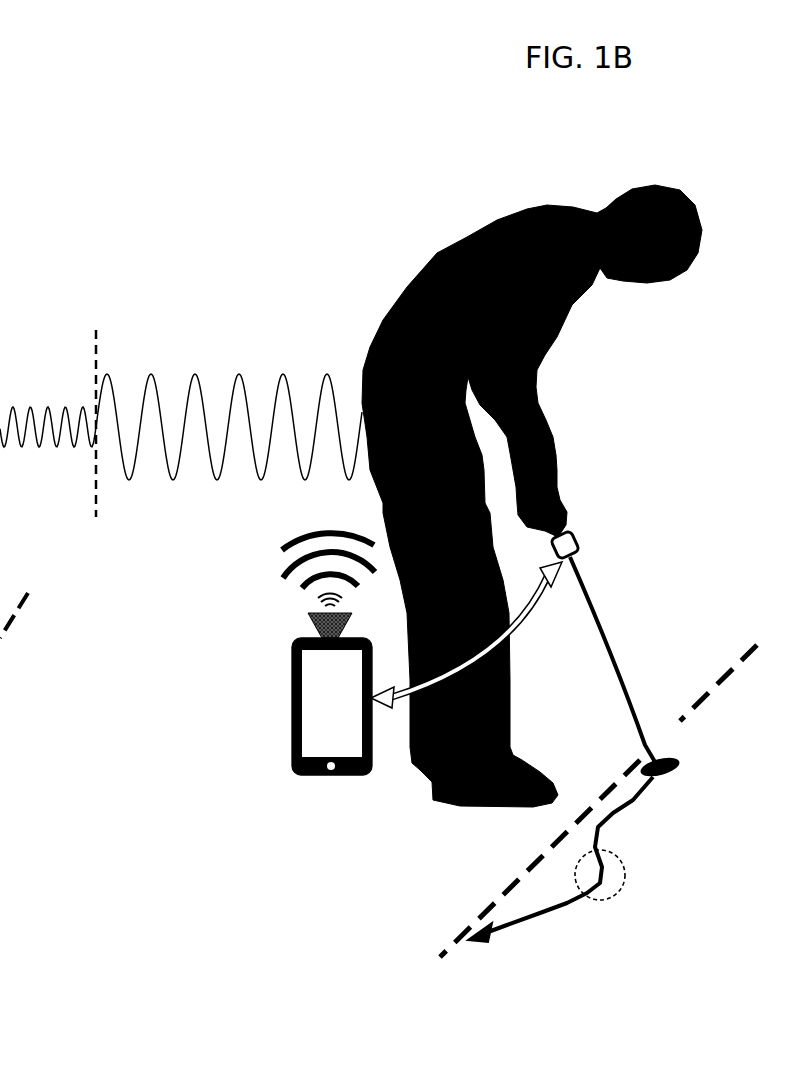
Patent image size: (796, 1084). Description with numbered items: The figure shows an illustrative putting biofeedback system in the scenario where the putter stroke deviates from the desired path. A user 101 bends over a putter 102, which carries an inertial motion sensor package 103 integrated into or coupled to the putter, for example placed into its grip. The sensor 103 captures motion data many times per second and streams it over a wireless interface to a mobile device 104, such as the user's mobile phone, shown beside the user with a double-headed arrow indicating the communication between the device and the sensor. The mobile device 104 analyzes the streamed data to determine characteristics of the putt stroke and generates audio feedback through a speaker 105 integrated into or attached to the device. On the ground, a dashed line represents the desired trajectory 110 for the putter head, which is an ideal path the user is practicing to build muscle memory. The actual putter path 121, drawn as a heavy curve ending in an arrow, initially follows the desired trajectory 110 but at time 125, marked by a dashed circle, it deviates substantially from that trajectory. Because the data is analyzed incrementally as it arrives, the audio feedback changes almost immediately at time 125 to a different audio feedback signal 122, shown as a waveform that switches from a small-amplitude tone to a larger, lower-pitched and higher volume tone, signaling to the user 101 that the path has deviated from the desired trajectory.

The user 101 is at (470, 232).
The putter 102 is at (630, 690).
The inertial motion sensor package 103 is at (578, 548).
The mobile device 104 is at (290, 700).
The speaker 105 is at (310, 625).
The desired trajectory 110 is at (717, 702).
The putter path 121 is at (567, 902).
The audio feedback signal 122 is at (222, 358).
The time 125 is at (77, 278).